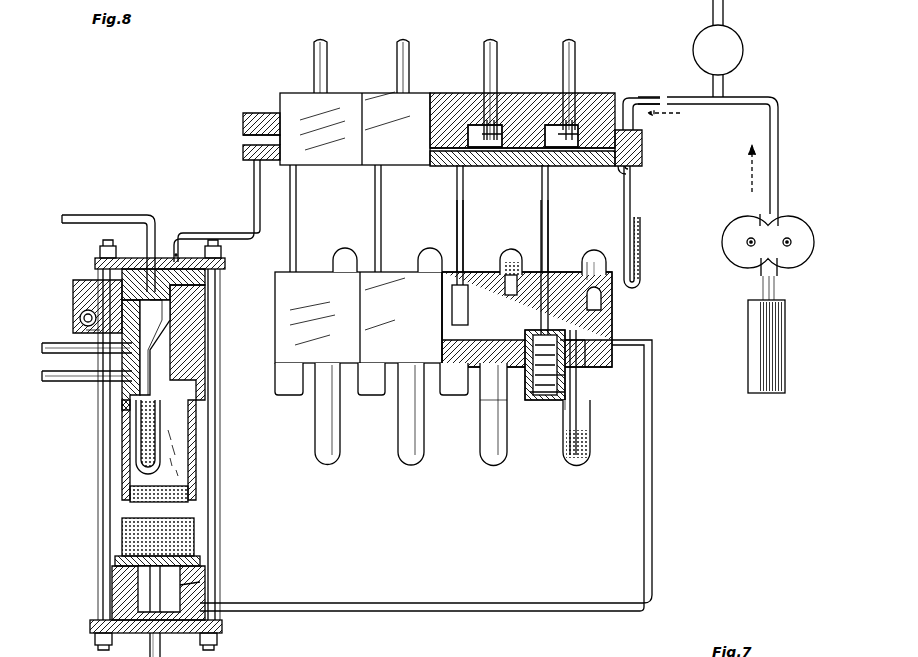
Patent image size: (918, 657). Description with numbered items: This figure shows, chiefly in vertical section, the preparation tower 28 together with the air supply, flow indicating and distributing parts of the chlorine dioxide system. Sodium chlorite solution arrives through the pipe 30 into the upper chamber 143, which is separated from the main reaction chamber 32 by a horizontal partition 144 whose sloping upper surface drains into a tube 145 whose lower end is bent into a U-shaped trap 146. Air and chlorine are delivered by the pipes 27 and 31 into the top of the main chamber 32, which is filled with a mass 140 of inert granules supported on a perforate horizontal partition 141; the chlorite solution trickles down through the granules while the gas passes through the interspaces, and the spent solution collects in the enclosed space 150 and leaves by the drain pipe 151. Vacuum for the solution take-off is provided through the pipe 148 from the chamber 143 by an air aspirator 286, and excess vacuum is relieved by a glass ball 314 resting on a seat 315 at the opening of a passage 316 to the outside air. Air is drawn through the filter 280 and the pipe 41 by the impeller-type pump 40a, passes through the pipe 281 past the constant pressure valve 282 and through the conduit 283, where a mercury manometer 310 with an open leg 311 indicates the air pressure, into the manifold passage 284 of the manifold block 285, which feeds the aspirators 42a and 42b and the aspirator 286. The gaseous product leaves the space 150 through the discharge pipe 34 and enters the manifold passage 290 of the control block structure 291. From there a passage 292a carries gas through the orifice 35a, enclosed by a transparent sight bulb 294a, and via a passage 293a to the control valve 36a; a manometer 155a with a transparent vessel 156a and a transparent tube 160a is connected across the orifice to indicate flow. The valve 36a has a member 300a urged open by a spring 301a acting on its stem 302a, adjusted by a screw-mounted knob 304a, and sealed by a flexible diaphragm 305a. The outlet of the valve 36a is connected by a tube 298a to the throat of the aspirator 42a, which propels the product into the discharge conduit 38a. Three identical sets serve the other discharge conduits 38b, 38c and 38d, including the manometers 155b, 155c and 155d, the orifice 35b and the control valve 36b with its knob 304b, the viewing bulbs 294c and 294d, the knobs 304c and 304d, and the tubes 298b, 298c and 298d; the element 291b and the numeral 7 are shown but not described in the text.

The manifold block 285 is at (506, 95).
The air aspirator 286 is at (243, 132).
The air aspirator 42b is at (480, 111).
The air aspirator 42a is at (570, 118).
The discharge conduit 38d is at (314, 46).
The discharge conduit 38c is at (397, 42).
The discharge conduit 38b is at (492, 48).
The discharge conduit 38a is at (578, 46).
The manifold passage 284 is at (260, 164).
The pipe 148 is at (254, 206).
The upper chamber 143 is at (182, 248).
The tube 298d is at (297, 205).
The tube 298c is at (377, 214).
The tube 298b is at (457, 196).
The tube 298a is at (542, 190).
The manometer 310 is at (632, 206).
The further leg 311 is at (642, 248).
The constant pressure valve 282 is at (744, 44).
The conduit 283 is at (694, 106).
The pipe 281 is at (780, 160).
The impeller-type pump 40a is at (796, 228).
The pipe 41 is at (776, 288).
The filter 280 is at (786, 336).
The control block structure 291 is at (612, 325).
The orifice viewing bulb 294d is at (336, 250).
The orifice viewing bulb 294c is at (418, 258).
The control valve 36b is at (458, 262).
The orifice 35b is at (500, 266).
The valve seat 291b is at (510, 262).
The member 300a is at (530, 270).
The control valve 36a is at (544, 262).
The passage 293a is at (588, 270).
The passage 292a is at (600, 304).
The flexible diaphragm 305a is at (565, 350).
The spring 301a is at (565, 378).
The screw-mounted knob 304a is at (565, 392).
The orifice 35a is at (606, 268).
The transparent sight bulb 294a is at (598, 258).
The valve knob 304d is at (286, 396).
The manometer 155d is at (316, 450).
The valve knob 304c is at (366, 396).
The manometer 155c is at (398, 440).
The valve knob 304b is at (450, 396).
The manometer 155b is at (480, 432).
The manifold passage 290 is at (512, 398).
The manometer 155a is at (592, 460).
The transparent vessel 156a is at (590, 444).
The transparent tube 160a is at (566, 430).
The stem 302a is at (555, 412).
The discharge pipe 34 is at (300, 602).
The pipe 30 is at (100, 213).
The tower 28 is at (230, 438).
The passage 316 is at (90, 280).
The horizontal partition 144 is at (185, 330).
The glass ball 314 is at (80, 316).
The seat 315 is at (90, 330).
The air pipe 27 is at (48, 356).
The chlorine pipe 31 is at (85, 384).
The tube 145 is at (124, 428).
The main reaction chamber 32 is at (128, 455).
The U-shaped bend 146 is at (185, 460).
The mass of granules 140 is at (196, 500).
The perforate horizontal partition 141 is at (122, 562).
The enclosed space 150 is at (136, 606).
The drain pipe 151 is at (150, 648).
The base 7 is at (233, 645).